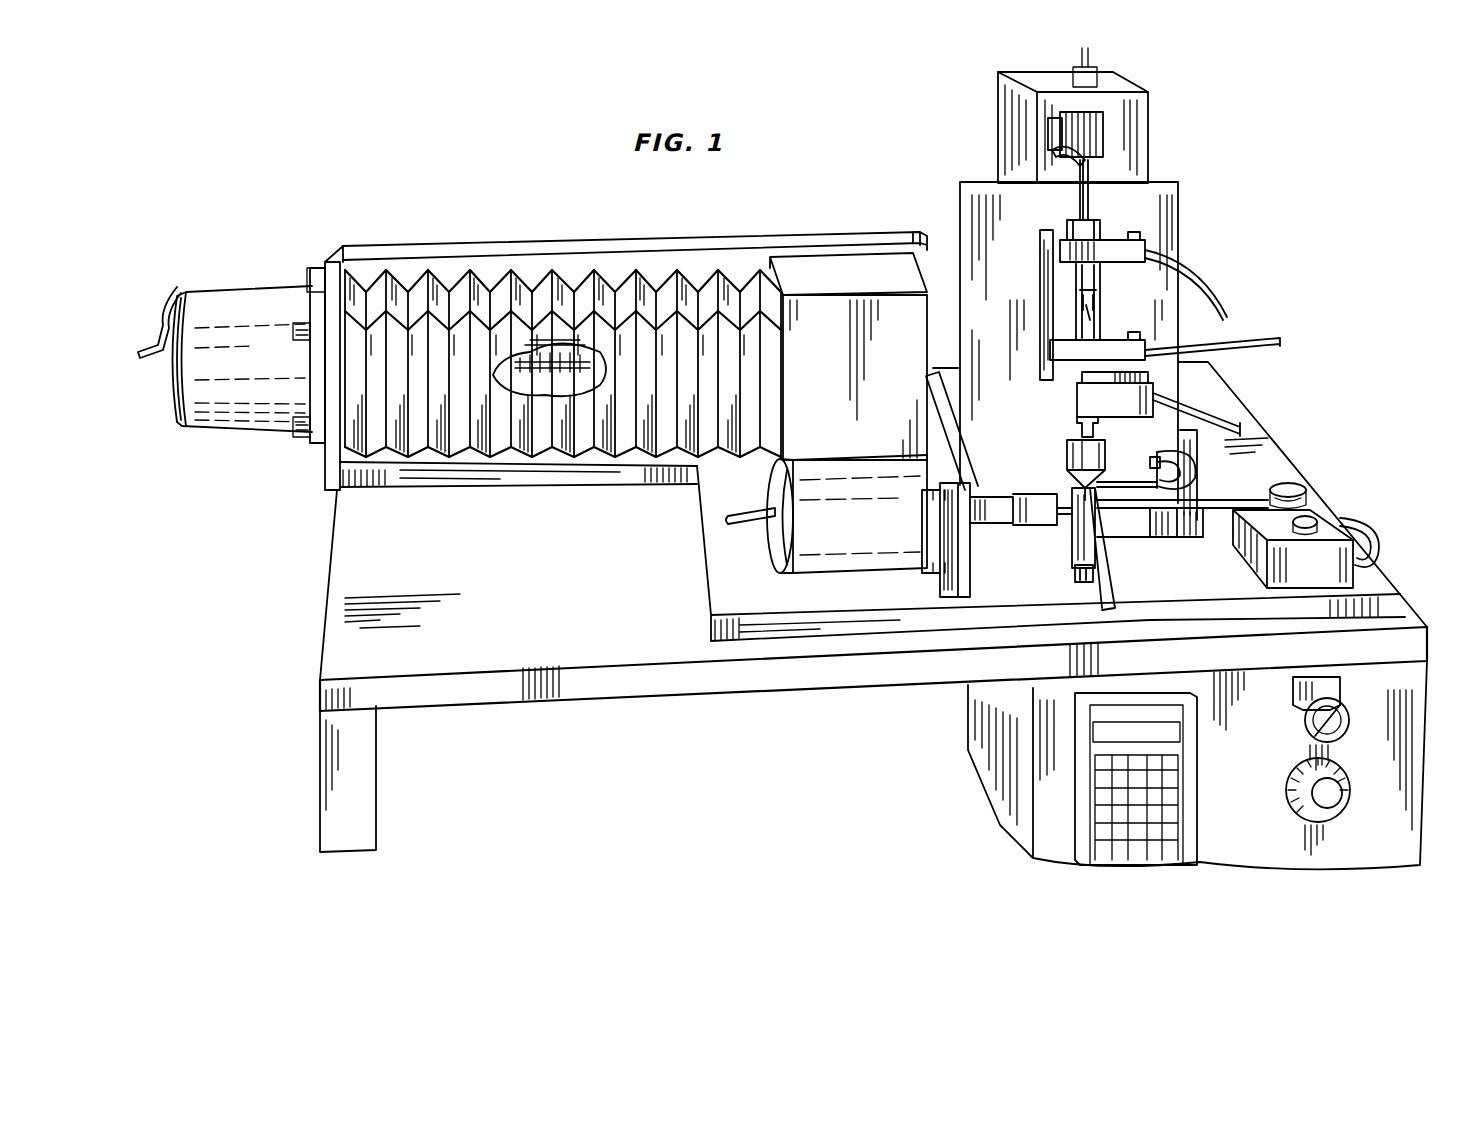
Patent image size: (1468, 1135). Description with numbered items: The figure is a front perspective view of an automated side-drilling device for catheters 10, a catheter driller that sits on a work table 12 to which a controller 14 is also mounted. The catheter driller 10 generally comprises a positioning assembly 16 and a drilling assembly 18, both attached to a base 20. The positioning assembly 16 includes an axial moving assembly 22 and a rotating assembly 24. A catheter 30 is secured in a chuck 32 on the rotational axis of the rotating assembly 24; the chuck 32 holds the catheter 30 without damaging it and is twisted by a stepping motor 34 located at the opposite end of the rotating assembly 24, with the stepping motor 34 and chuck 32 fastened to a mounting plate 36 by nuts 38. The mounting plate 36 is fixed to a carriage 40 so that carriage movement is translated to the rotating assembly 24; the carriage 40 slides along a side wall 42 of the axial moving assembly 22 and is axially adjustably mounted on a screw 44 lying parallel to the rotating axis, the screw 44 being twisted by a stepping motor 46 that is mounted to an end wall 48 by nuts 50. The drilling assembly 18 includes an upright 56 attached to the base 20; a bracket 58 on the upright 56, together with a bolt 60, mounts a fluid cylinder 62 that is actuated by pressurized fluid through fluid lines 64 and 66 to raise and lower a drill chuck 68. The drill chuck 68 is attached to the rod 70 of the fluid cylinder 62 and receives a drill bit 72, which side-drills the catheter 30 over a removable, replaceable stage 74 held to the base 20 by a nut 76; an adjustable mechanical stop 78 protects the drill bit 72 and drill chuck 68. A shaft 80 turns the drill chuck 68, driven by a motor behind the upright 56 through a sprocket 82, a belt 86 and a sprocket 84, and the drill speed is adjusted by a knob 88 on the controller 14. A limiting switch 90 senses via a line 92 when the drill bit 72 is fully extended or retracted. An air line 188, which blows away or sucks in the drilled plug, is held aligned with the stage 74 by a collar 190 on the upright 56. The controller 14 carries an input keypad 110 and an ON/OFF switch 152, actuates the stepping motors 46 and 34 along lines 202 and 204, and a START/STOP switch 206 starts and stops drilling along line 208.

The automated side-drilling device for catheters 10 is at (1301, 452).
The work table 12 is at (677, 684).
The controller 14 is at (990, 724).
The positioning assembly 16 is at (725, 235).
The drilling assembly 18 is at (1194, 218).
The base 20 is at (727, 599).
The axial moving assembly 22 is at (531, 460).
The rotating assembly 24 is at (852, 458).
The catheter 30 is at (1217, 520).
The chuck 32 is at (1040, 525).
The stepping motor 34 is at (841, 533).
The mounting plate 36 is at (952, 450).
The nuts 38 is at (937, 515).
The carriage 40 is at (825, 250).
The side wall 42 is at (572, 245).
The screw 44 is at (562, 365).
The stepping motor 46 is at (237, 369).
The end wall 48 is at (327, 470).
The nuts 50 is at (303, 345).
The upright 56 is at (982, 205).
The bracket 58 is at (1047, 290).
The bolt 60 is at (1067, 230).
The fluid cylinder 62 is at (1077, 310).
The fluid line 64 is at (1202, 280).
The fluid line 66 is at (1262, 335).
The drill chuck 68 is at (1067, 452).
The rod 70 is at (1102, 432).
The drill bit 72 is at (1072, 492).
The stage 74 is at (1097, 525).
The nut 76 is at (1097, 556).
The adjustable mechanical stop 78 is at (1100, 300).
The shaft 80 is at (1092, 205).
The sprocket 82 is at (1052, 125).
The sprocket 84 is at (1107, 125).
The belt 86 is at (1052, 155).
The knob 88 is at (1323, 814).
The limiting switch 90 is at (1101, 413).
The line 92 is at (1212, 400).
The input keypad 110 is at (1190, 805).
The ON/OFF switch 152 is at (1305, 723).
The air line 188 is at (1127, 480).
The collar 190 is at (1197, 460).
The line 202 is at (177, 306).
The line 204 is at (732, 520).
The START/STOP switch 206 is at (1291, 573).
The line 208 is at (1374, 520).